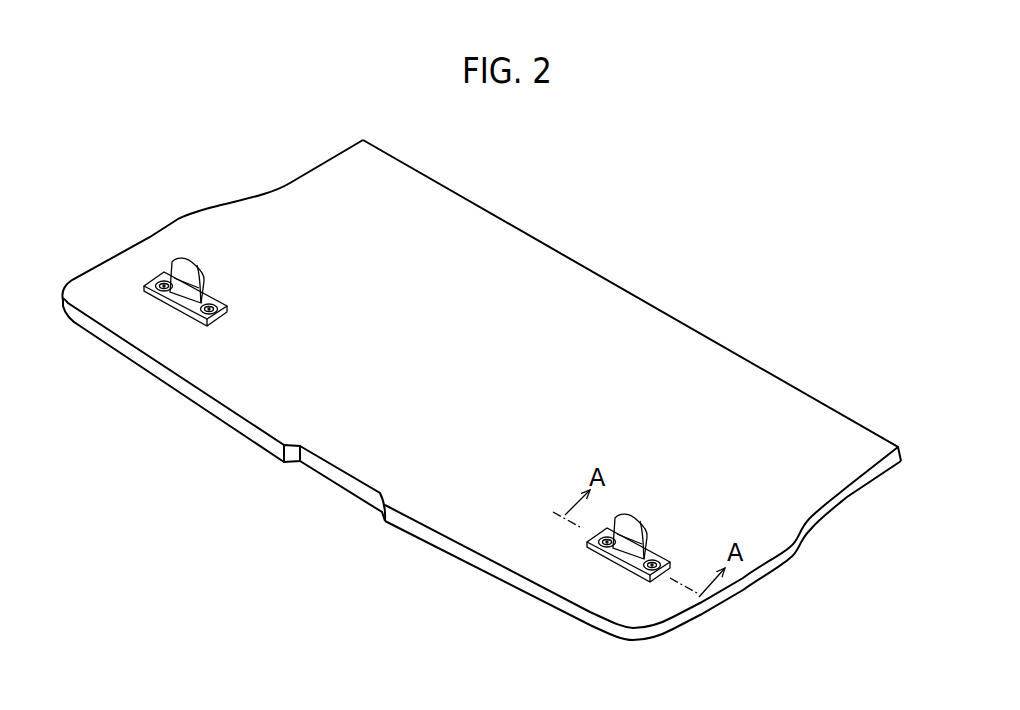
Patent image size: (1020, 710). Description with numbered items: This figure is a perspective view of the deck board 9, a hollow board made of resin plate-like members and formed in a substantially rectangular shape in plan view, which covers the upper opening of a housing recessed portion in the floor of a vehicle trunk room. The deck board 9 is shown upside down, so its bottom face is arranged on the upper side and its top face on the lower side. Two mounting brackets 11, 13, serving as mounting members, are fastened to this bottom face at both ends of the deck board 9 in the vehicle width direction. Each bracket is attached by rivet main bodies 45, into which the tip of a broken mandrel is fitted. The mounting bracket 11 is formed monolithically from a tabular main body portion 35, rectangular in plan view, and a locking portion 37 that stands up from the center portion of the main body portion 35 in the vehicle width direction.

The deck board 9 is at (663, 237).
The mounting bracket 11 is at (631, 533).
The mounting bracket 13 is at (213, 297).
The main body portion 35 is at (616, 556).
The locking portion 37 is at (626, 526).
The rivet main body 45 is at (645, 574).